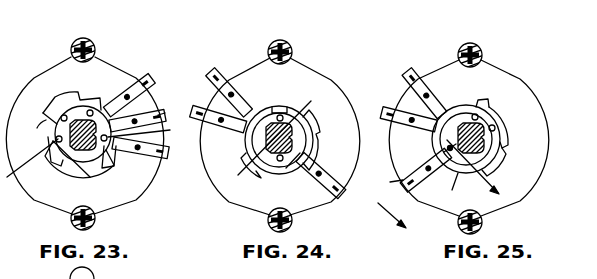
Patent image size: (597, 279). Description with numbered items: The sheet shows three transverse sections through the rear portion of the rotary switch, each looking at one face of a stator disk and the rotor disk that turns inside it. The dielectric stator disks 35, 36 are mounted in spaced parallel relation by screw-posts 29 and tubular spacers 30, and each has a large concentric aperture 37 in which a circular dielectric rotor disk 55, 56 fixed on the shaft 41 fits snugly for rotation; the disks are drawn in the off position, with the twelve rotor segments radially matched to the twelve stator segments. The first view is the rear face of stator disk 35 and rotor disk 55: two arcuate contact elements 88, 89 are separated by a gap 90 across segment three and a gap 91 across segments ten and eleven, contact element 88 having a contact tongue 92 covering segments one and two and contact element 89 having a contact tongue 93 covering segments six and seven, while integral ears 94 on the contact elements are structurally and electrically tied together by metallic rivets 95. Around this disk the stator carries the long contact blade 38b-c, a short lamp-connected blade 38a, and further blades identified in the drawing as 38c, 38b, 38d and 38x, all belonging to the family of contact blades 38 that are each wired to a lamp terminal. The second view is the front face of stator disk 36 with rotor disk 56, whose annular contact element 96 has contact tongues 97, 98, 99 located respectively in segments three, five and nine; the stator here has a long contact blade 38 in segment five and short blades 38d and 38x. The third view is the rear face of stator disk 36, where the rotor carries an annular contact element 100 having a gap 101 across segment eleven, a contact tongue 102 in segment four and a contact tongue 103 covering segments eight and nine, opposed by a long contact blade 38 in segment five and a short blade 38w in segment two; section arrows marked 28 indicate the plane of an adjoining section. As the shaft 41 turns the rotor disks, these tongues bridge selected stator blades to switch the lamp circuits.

In FIG. 25, the section line 28 is at (448, 195).
In FIG. 23, the screw-post 29 is at (112, 277).
In FIG. 23, the tubular spacer 30 is at (94, 47).
In FIG. 25, the tubular spacer 30 is at (481, 49).
In FIG. 23, the stator disk 35 is at (34, 192).
In FIG. 24, the stator disk 36 is at (243, 201).
In FIG. 25, the stator disk 36 is at (522, 83).
In FIG. 25, the concentric aperture 37 is at (496, 123).
In FIG. 24, the long contact blade 38 is at (340, 203).
In FIG. 25, the long contact blade 38 is at (427, 207).
In FIG. 23, the contact blade 38a is at (163, 165).
In FIG. 24, the lever 38b is at (226, 78).
In FIG. 23, the contact blade 38b-c is at (140, 80).
In FIG. 23, the lever 38c is at (172, 112).
In FIG. 24, the contact blade 38d is at (215, 130).
In FIG. 25, the contact blade 38w is at (411, 72).
In FIG. 25, the lever 38x is at (393, 108).
In FIG. 24, the shaft 41 is at (274, 145).
In FIG. 23, the rotor disk 55 is at (55, 163).
In FIG. 24, the rotor disk 56 is at (292, 124).
In FIG. 25, the rotor disk 56 is at (461, 113).
In FIG. 23, the arcuate contact element 88 is at (88, 105).
In FIG. 23, the arcuate contact element 89 is at (110, 167).
In FIG. 23, the gap 90 is at (52, 138).
In FIG. 23, the gap 91 is at (148, 108).
In FIG. 23, the contact tongue 92 is at (57, 105).
In FIG. 23, the contact tongue 93 is at (74, 178).
In FIG. 23, the integral ear 94 is at (93, 159).
In FIG. 23, the metallic rivet 95 is at (92, 179).
In FIG. 24, the annular contact element 96 is at (279, 110).
In FIG. 24, the contact tongue 97 is at (322, 122).
In FIG. 24, the contact tongue 98 is at (287, 170).
In FIG. 24, the contact tongue 99 is at (245, 153).
In FIG. 25, the annular contact element 100 is at (458, 174).
In FIG. 25, the gap 101 is at (485, 112).
In FIG. 25, the contact tongue 102 is at (386, 183).
In FIG. 25, the contact tongue 103 is at (510, 147).